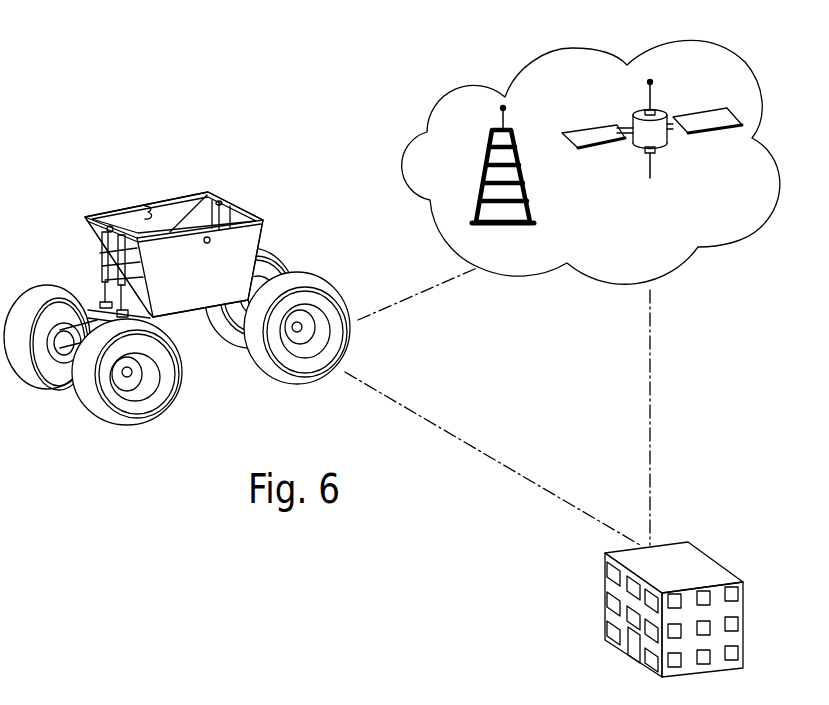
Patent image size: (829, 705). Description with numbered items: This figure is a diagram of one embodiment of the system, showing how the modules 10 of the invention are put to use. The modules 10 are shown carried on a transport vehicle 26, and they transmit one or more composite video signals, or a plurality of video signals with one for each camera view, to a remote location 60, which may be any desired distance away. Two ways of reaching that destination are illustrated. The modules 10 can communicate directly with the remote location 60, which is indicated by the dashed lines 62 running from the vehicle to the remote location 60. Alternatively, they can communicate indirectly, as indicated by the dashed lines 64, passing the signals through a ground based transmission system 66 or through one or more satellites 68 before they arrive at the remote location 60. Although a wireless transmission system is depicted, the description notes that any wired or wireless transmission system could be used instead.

The module 10 is at (152, 200).
The transport vehicle 26 is at (177, 277).
The remote location 60 is at (697, 560).
The dashed lines 62 is at (463, 440).
The dashed lines 64 is at (379, 308).
The ground based transmission system 66 is at (500, 129).
The satellite 68 is at (658, 112).